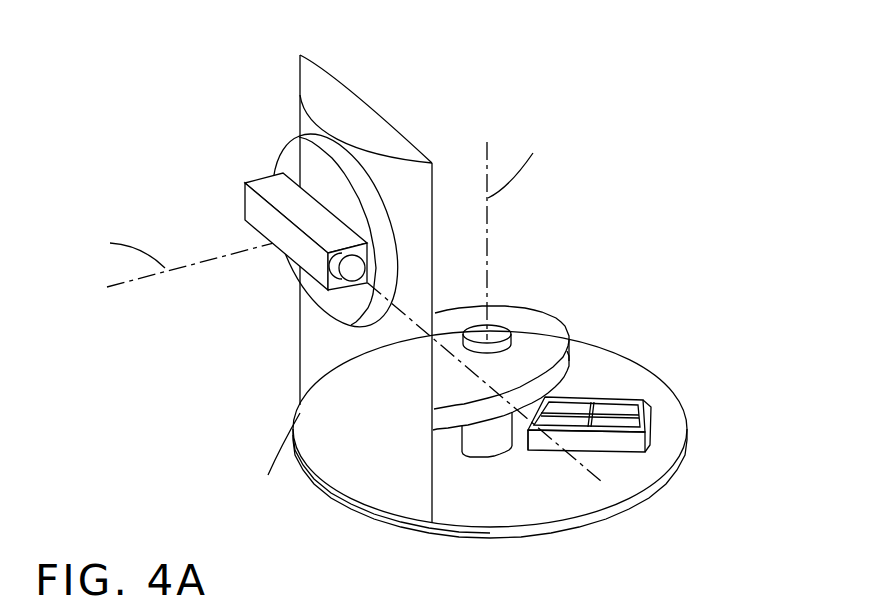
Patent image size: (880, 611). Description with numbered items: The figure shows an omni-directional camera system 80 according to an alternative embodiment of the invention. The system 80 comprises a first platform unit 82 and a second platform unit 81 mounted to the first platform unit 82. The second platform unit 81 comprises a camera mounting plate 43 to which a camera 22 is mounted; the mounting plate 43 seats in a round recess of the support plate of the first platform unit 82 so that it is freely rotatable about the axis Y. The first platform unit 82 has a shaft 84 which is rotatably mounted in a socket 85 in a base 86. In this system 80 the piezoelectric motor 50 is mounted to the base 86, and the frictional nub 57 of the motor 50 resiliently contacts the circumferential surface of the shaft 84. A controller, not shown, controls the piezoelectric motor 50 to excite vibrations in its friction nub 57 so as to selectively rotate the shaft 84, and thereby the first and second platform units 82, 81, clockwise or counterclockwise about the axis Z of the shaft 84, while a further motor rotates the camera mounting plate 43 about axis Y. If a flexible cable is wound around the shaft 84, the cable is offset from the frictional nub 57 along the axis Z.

The omni-directional camera system 80 is at (204, 101).
The second platform unit 81 is at (360, 70).
The camera mounting plate 43 is at (378, 215).
The camera 22 is at (253, 217).
The shaft 84 is at (498, 333).
The first platform unit 82 is at (559, 309).
The piezoelectric motor 50 is at (623, 378).
The base 86 is at (709, 407).
The socket 85 is at (470, 455).
The frictional nub 57 is at (522, 432).